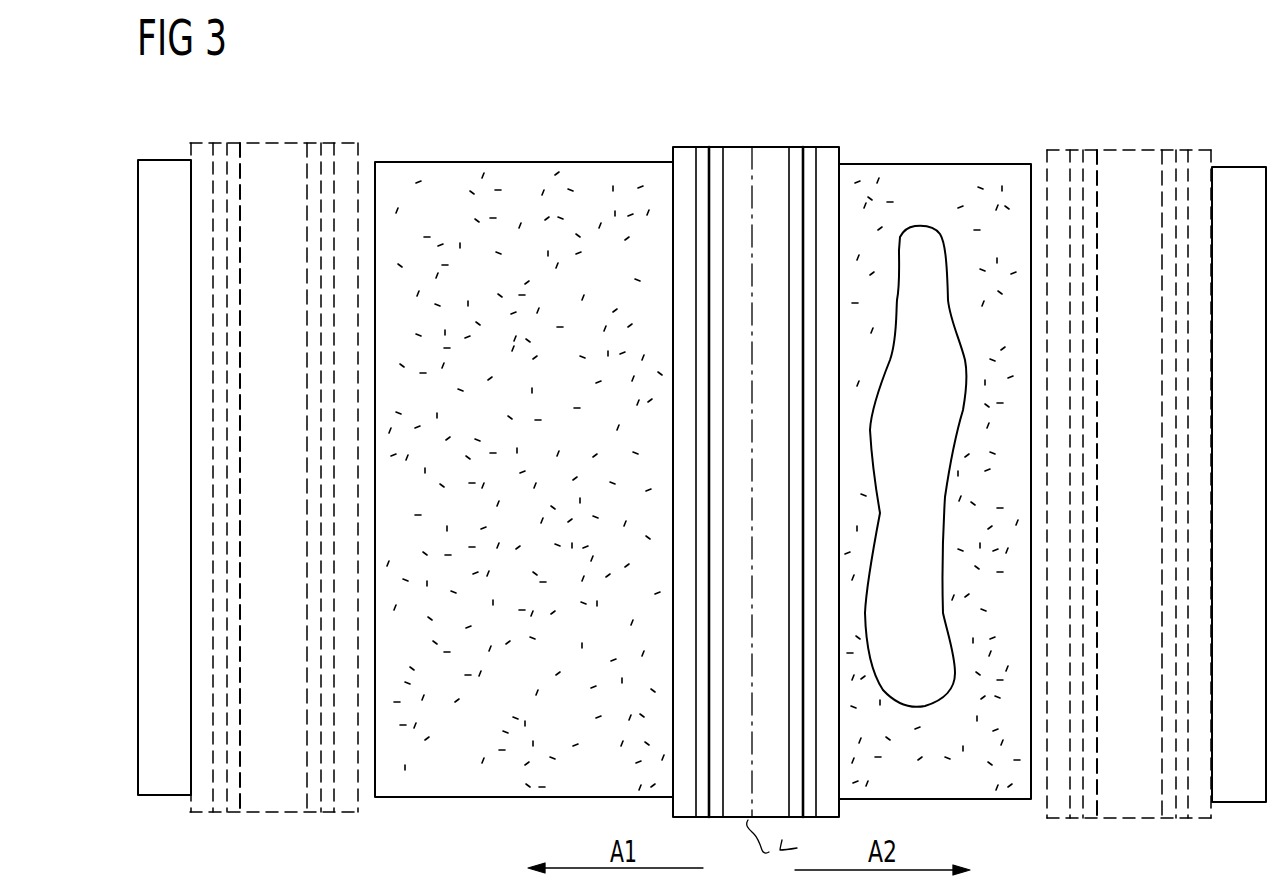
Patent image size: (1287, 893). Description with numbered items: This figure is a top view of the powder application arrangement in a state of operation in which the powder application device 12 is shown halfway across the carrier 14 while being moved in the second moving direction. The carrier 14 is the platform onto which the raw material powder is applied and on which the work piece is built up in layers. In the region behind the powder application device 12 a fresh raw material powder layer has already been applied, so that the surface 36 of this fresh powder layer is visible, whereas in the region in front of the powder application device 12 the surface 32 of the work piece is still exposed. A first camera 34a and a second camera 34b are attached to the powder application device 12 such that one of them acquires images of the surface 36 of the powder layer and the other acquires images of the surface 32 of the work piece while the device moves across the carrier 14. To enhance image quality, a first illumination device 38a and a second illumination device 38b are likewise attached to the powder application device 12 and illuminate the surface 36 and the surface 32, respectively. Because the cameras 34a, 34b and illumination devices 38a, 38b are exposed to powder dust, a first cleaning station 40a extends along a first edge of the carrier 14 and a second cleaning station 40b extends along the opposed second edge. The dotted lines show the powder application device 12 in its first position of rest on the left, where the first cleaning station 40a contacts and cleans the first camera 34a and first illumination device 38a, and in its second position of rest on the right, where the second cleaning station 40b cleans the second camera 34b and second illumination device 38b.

The first cleaning station 40a is at (163, 168).
The second cleaning station 40b is at (1240, 170).
The carrier 14 is at (388, 162).
The surface of the fresh raw material powder layer 36 is at (523, 168).
The powder application device 12 is at (753, 147).
The first camera 34a is at (703, 147).
The second camera 34b is at (808, 147).
The first illumination device 38a is at (717, 147).
The second illumination device 38b is at (798, 147).
The surface of the work piece 32 is at (921, 228).